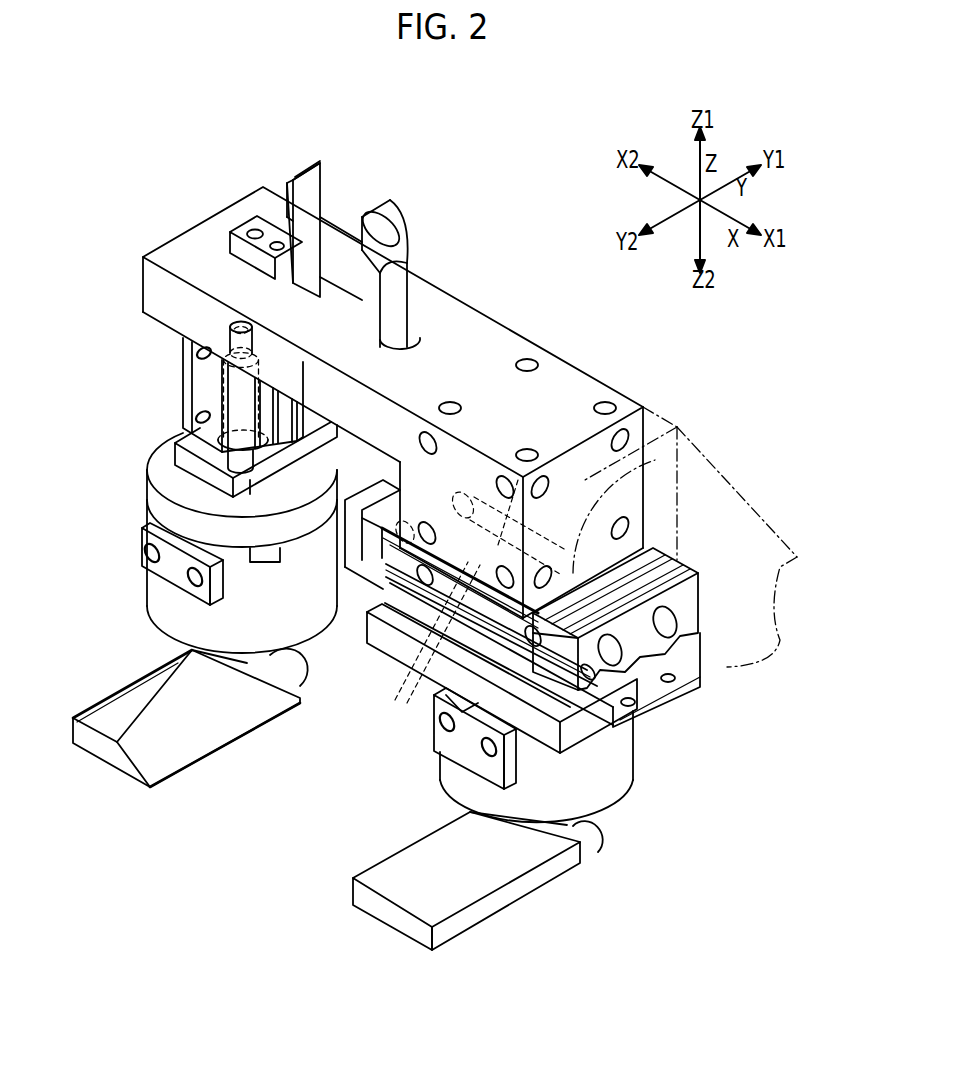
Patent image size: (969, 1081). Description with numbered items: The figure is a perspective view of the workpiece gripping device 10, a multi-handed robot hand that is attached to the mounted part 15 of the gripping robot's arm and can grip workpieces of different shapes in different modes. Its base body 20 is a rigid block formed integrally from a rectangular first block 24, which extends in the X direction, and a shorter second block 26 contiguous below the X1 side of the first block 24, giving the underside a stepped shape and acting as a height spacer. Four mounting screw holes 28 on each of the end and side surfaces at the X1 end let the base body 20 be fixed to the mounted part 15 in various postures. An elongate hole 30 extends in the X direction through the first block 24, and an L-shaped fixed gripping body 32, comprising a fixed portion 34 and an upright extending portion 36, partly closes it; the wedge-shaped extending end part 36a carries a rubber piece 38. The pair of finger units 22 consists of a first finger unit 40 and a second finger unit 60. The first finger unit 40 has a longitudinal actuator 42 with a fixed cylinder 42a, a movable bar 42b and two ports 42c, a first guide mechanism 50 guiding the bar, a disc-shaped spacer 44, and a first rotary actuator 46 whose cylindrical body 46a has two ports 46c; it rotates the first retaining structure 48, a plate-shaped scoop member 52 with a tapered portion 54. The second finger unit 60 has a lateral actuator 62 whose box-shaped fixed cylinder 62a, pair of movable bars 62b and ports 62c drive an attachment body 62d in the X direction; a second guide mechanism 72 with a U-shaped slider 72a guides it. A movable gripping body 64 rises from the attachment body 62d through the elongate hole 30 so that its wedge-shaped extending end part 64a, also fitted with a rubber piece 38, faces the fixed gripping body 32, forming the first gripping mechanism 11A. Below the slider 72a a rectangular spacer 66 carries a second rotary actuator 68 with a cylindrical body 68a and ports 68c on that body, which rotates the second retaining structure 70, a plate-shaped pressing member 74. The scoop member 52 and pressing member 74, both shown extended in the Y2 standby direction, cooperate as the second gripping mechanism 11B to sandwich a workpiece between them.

The workpiece gripping device 10 is at (146, 112).
The first gripping mechanism 11A is at (413, 186).
The second gripping mechanism 11B is at (240, 863).
The mounted part 15 is at (746, 526).
The base body 20 is at (494, 300).
The pair of finger units 22 is at (413, 635).
The first block 24 is at (156, 282).
The second block 26 is at (418, 480).
The mounting screw holes 28 is at (594, 408).
The elongate hole 30 is at (332, 288).
The fixed gripping body 32 is at (276, 128).
The fixed portion 34 is at (242, 229).
The extending portion 36 is at (283, 218).
The extending end part 36a is at (290, 177).
The rubber piece 38 is at (312, 180).
The first finger unit 40 is at (134, 452).
The longitudinal actuator 42 is at (158, 345).
The fixed cylinder 42a is at (186, 405).
The movable bar 42b is at (245, 382).
The ports 42c is at (200, 416).
The spacer 44 is at (158, 494).
The first rotary actuator 46 is at (130, 636).
The cylindrical body 46a is at (306, 626).
The ports 46c is at (190, 581).
The first retaining structure 48 is at (186, 741).
The first guide mechanism 50 is at (302, 460).
The scoop member 52 is at (104, 750).
The tapered portion 54 is at (224, 729).
The second finger unit 60 is at (662, 774).
The lateral actuator 62 is at (672, 650).
The fixed cylinder 62a is at (700, 590).
The movable bars 62b is at (458, 645).
The ports 62c is at (412, 572).
The attachment body 62d is at (366, 541).
The movable gripping body 64 is at (398, 288).
The extending end part 64a is at (390, 204).
The spacer 66 is at (581, 728).
The second rotary actuator 68 is at (432, 799).
The cylindrical body 68a is at (548, 813).
The mounting block 68c is at (484, 751).
The second retaining structure 70 is at (473, 881).
The second guide mechanism 72 is at (578, 670).
The slider 72a is at (663, 708).
The pressing member 74 is at (484, 912).